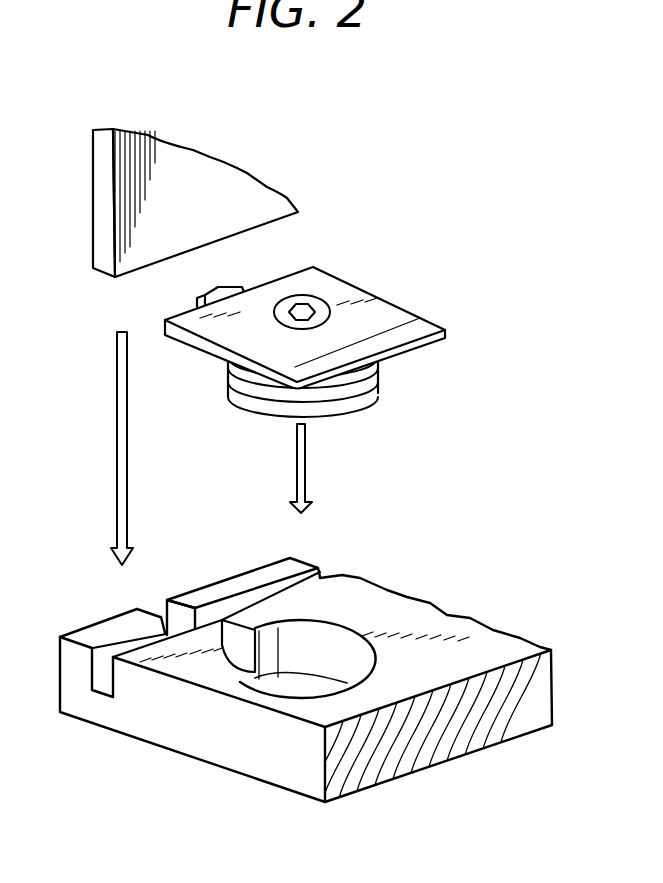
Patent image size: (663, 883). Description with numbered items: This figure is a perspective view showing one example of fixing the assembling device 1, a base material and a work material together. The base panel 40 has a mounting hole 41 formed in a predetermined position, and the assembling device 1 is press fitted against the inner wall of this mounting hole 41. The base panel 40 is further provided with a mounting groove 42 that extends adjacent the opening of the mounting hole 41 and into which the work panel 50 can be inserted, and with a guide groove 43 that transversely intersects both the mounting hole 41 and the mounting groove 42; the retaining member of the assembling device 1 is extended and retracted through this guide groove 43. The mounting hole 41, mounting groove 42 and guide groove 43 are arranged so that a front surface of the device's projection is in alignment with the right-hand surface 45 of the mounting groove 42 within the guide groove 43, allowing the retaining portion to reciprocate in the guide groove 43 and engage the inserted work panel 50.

The assembling device 1 is at (389, 258).
The base panel 40 is at (255, 758).
The mounting hole 41 is at (348, 642).
The mounting groove 42 is at (275, 588).
The guide groove 43 is at (183, 615).
The right-hand surface of the mounting groove 45 is at (107, 662).
The work panel 50 is at (202, 163).